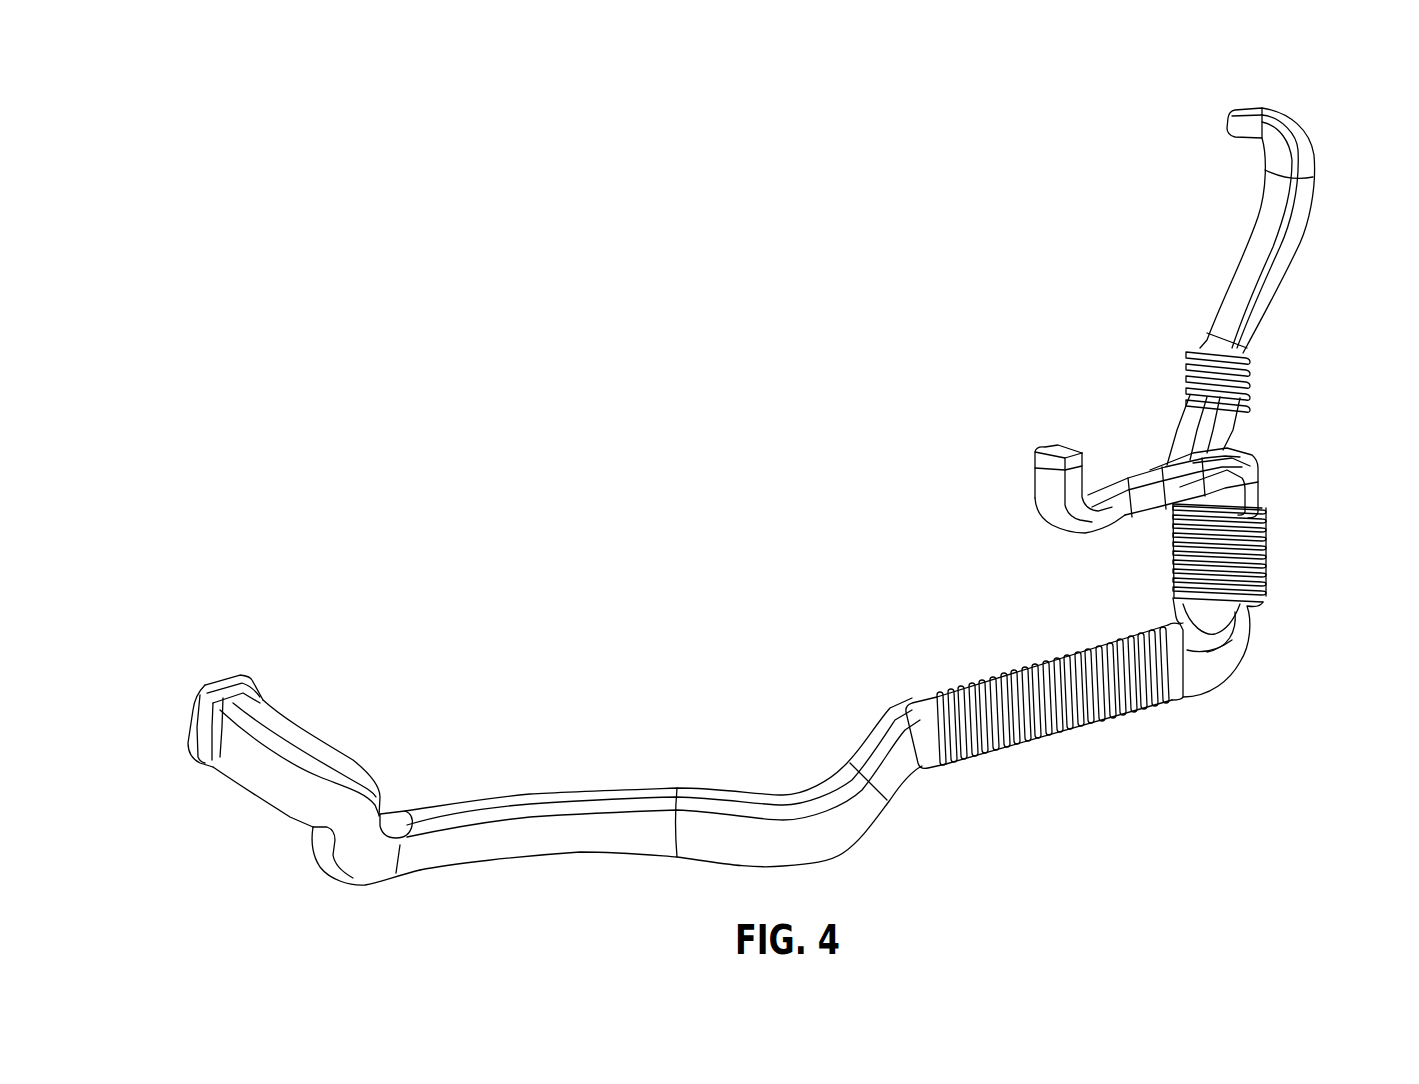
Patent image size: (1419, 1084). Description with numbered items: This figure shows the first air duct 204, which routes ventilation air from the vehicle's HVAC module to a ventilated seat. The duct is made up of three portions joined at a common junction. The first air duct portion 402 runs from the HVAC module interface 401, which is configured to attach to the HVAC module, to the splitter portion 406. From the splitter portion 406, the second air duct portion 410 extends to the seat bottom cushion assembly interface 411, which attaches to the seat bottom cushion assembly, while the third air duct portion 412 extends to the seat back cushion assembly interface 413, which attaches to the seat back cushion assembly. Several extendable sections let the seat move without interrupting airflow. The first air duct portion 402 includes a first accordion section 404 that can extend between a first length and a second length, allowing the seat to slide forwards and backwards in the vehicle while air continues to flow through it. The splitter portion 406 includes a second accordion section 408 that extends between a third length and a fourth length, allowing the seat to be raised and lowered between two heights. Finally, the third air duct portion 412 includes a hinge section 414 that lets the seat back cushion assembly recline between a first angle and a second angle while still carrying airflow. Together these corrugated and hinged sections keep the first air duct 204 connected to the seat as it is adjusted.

The first air duct 204 is at (507, 105).
The HVAC module interface 401 is at (205, 728).
The first air duct portion 402 is at (488, 838).
The first accordion section 404 is at (1058, 712).
The splitter portion 406 is at (1220, 676).
The second accordion section 408 is at (1268, 568).
The second air duct portion 410 is at (1222, 452).
The seat bottom cushion assembly interface 411 is at (1060, 447).
The third air duct portion 412 is at (1295, 243).
The seat back cushion assembly interface 413 is at (1228, 118).
The hinge section 414 is at (1242, 385).